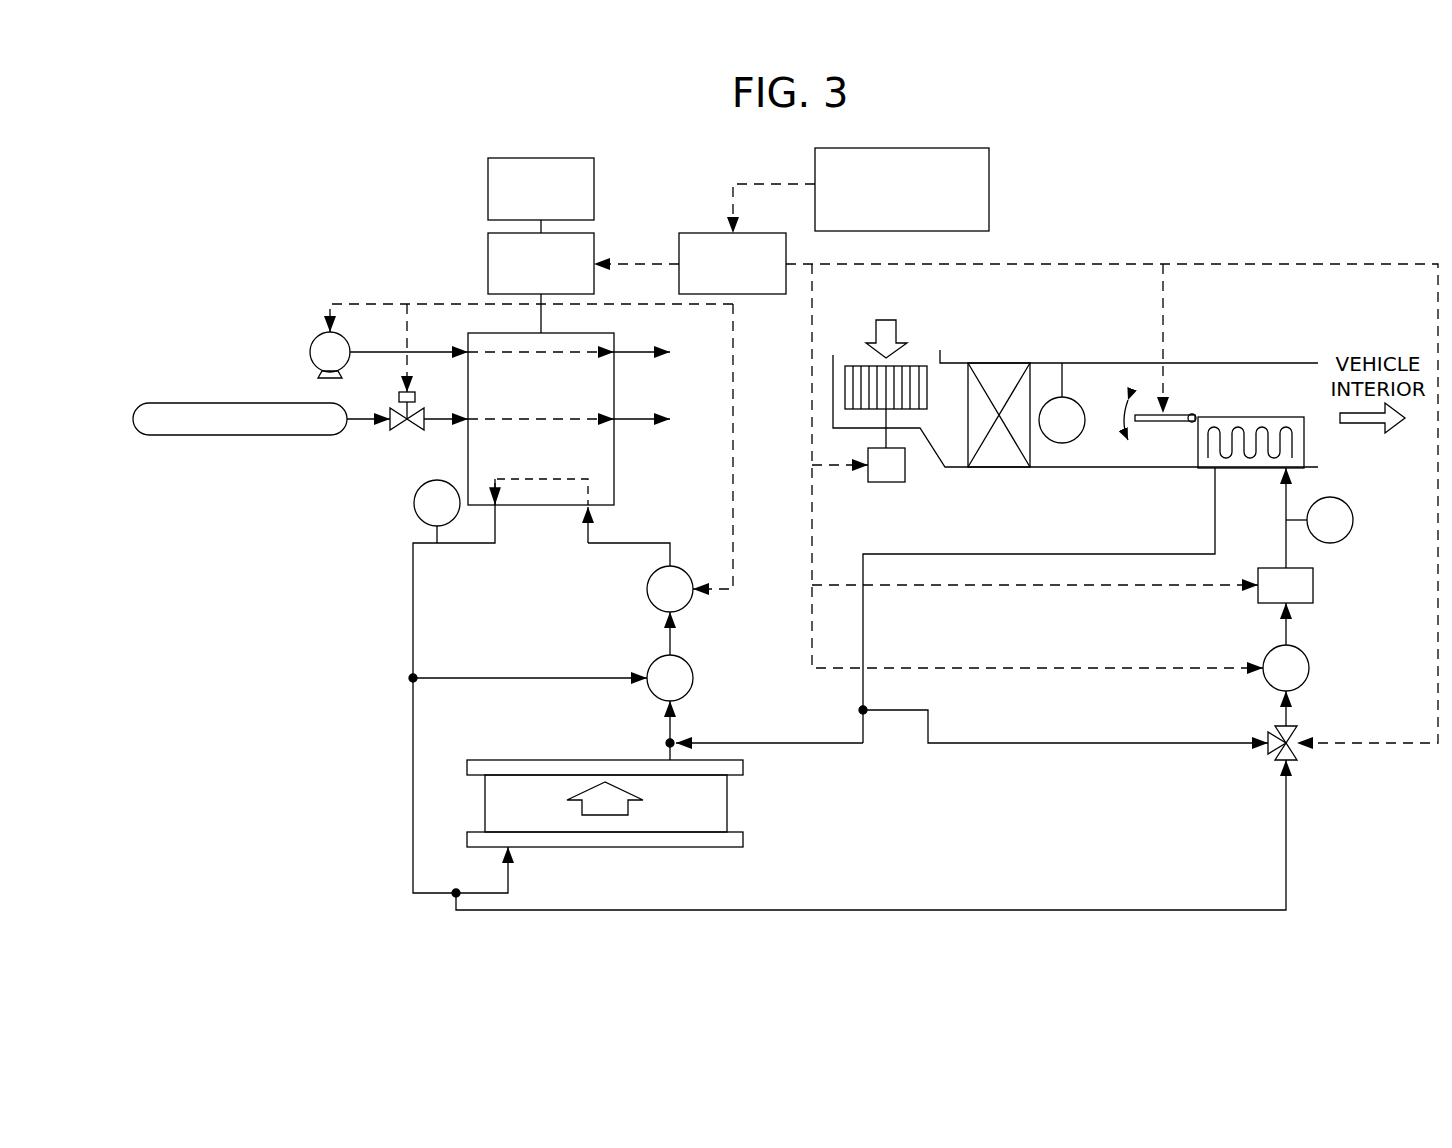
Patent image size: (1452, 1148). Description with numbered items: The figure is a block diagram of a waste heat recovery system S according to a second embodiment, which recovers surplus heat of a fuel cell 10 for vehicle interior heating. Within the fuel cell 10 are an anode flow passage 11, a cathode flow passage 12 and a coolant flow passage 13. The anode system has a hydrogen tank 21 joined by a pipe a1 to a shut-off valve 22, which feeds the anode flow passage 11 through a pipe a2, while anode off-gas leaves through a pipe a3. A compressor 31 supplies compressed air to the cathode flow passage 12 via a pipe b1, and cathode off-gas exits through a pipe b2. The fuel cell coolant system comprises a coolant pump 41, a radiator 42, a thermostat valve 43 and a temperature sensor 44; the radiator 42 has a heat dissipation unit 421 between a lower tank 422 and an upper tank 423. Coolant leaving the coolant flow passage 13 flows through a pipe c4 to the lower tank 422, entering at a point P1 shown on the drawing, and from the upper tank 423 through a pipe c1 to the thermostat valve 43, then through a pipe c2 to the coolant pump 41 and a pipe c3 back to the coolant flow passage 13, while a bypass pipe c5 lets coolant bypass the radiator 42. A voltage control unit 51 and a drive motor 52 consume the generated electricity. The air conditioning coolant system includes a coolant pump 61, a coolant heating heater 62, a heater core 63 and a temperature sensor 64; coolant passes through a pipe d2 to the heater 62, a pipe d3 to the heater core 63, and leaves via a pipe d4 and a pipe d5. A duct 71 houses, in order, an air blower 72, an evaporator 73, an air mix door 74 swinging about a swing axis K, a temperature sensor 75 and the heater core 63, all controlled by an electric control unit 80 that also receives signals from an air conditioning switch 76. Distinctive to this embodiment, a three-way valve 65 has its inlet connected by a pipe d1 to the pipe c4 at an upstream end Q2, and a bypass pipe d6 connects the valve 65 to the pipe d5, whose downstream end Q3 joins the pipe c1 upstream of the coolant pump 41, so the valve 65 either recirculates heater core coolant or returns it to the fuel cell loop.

The fuel cell 10 is at (565, 419).
The anode flow passage 11 is at (500, 421).
The cathode flow passage 12 is at (500, 354).
The coolant flow passage 13 is at (552, 478).
The hydrogen tank 21 is at (242, 403).
The shut-off valve 22 is at (398, 432).
The compressor 31 is at (320, 337).
The coolant pump 41 is at (647, 589).
The radiator 42 is at (641, 782).
The thermostat valve 43 is at (653, 700).
The temperature sensor 44 is at (414, 506).
The voltage control unit 51 is at (594, 249).
The drive motor 52 is at (594, 188).
The coolant pump 61 is at (1310, 667).
The coolant heating heater 62 is at (1313, 586).
The heater core 63 is at (1260, 417).
The temperature sensor 64 is at (1353, 522).
The three-way valve 65 is at (1296, 729).
The duct 71 is at (1238, 363).
The air blower 72 is at (860, 364).
The evaporator 73 is at (992, 468).
The air mix door 74 is at (1180, 405).
The temperature sensor 75 is at (1082, 436).
The air conditioning switch 76 is at (989, 188).
The electric control unit 80 is at (687, 233).
The heat dissipation unit 421 is at (737, 805).
The lower tank 422 is at (753, 842).
The upper tank 423 is at (753, 770).
The waste heat recovery system S is at (1188, 190).
The swing axis K is at (1190, 422).
The pipe a1 is at (360, 414).
The pipe a2 is at (439, 414).
The pipe a3 is at (639, 414).
The pipe b1 is at (428, 350).
The pipe b2 is at (639, 350).
The pipe c1 is at (682, 714).
The pipe c2 is at (671, 645).
The pipe c3 is at (635, 543).
The pipe c4 is at (413, 730).
The bypass pipe c5 is at (536, 672).
The pipe d1 is at (1285, 829).
The pipe d2 is at (1280, 716).
The pipe d3 is at (1280, 632).
The pipe d4 is at (1283, 540).
The pipe d5 is at (1096, 547).
The bypass pipe d6 is at (1095, 737).
The heat receiving point P1 is at (506, 849).
The upstream end Q2 is at (452, 898).
The downstream end Q3 is at (666, 743).